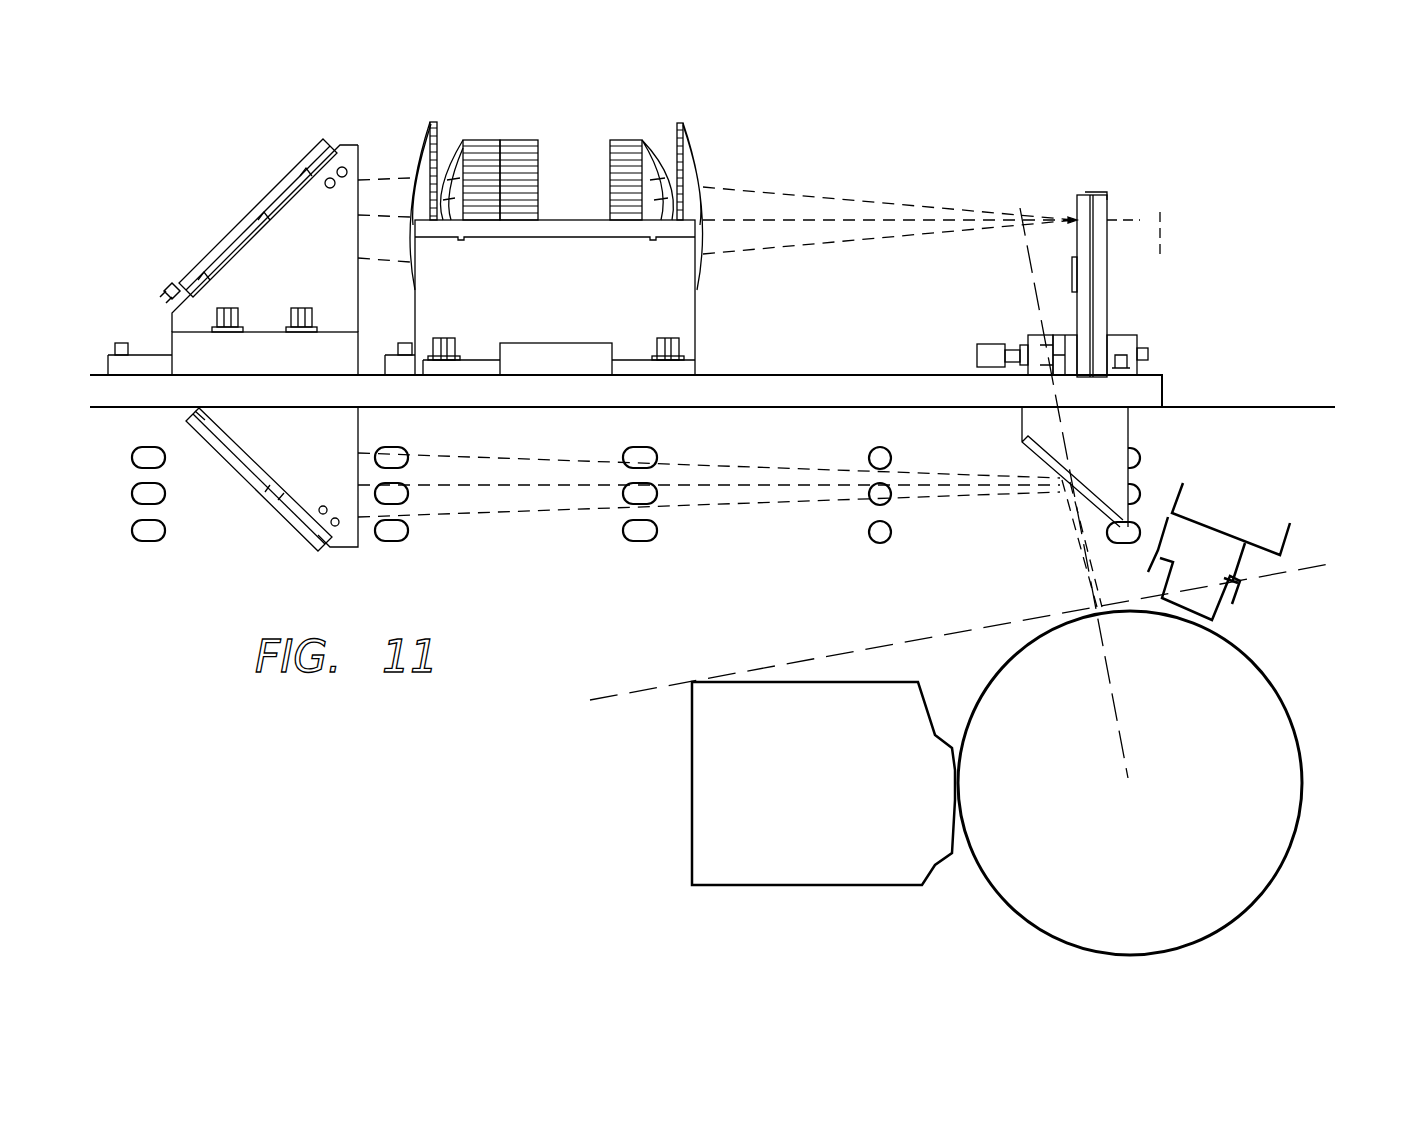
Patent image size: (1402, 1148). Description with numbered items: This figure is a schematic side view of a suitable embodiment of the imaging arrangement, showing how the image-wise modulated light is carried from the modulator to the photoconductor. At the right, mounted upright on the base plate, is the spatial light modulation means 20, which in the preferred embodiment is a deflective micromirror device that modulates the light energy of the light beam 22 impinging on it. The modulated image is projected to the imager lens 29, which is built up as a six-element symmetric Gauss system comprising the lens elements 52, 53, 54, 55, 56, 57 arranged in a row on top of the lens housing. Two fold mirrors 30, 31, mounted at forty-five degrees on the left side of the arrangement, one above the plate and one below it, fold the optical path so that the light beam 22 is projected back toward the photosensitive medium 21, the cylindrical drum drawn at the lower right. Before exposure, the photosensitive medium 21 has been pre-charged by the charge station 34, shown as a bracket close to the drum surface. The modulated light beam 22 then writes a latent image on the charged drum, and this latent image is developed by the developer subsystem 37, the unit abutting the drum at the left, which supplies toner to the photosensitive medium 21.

The spatial light modulation means 20 is at (1097, 193).
The photosensitive medium 21 is at (1304, 782).
The light beam 22 is at (1123, 760).
The imager lens 29 is at (573, 307).
The fold mirror 30 is at (270, 188).
The fold mirror 31 is at (255, 496).
The charge station 34 is at (1232, 525).
The developer subsystem 37 is at (690, 783).
The lens element 52 is at (425, 148).
The lens element 53 is at (476, 140).
The lens element 54 is at (522, 140).
The lens element 55 is at (620, 140).
The lens element 56 is at (660, 160).
The lens element 57 is at (688, 142).